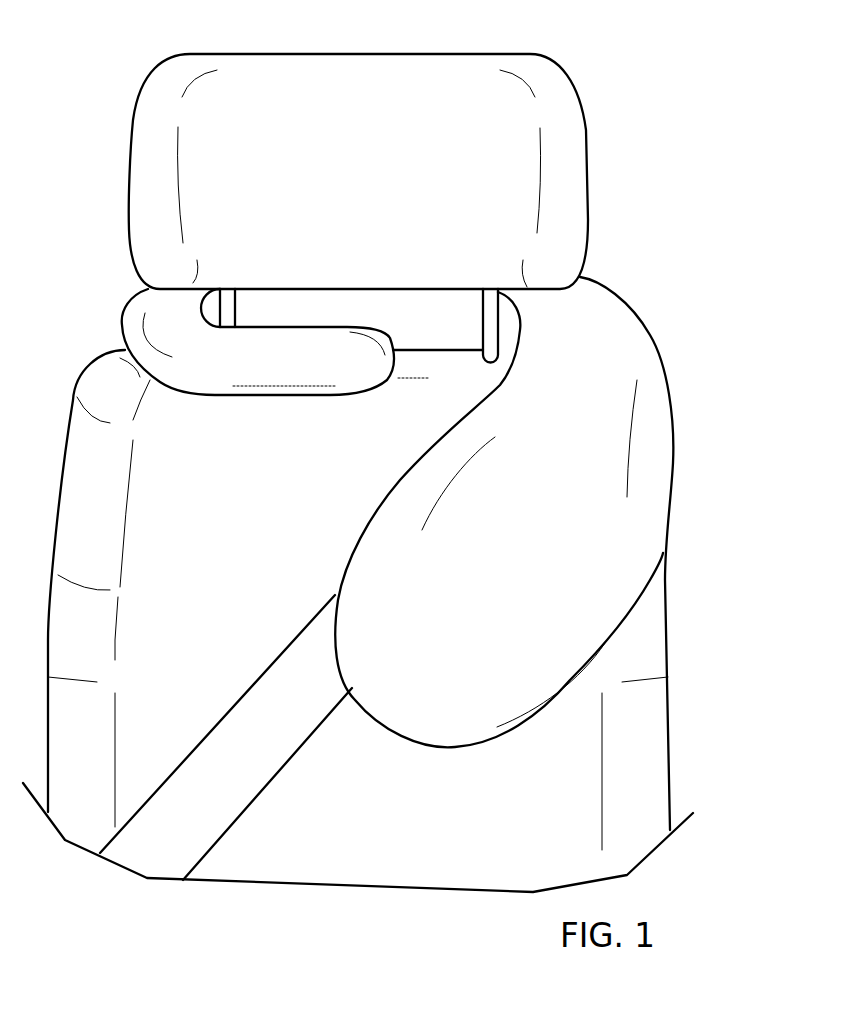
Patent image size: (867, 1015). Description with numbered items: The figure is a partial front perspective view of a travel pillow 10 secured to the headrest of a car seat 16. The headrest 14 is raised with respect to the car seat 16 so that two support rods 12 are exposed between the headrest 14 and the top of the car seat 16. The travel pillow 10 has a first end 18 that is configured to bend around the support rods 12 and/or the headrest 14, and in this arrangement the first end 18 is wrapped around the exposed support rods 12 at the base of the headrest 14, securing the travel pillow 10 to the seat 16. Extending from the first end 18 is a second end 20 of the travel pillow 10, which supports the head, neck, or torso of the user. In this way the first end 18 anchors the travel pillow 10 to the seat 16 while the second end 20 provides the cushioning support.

The travel pillow 10 is at (364, 448).
The support rods 12 is at (498, 292).
The headrest 14 is at (582, 122).
The car seat 16 is at (370, 821).
The first end 18 is at (330, 342).
The second end 20 is at (557, 640).